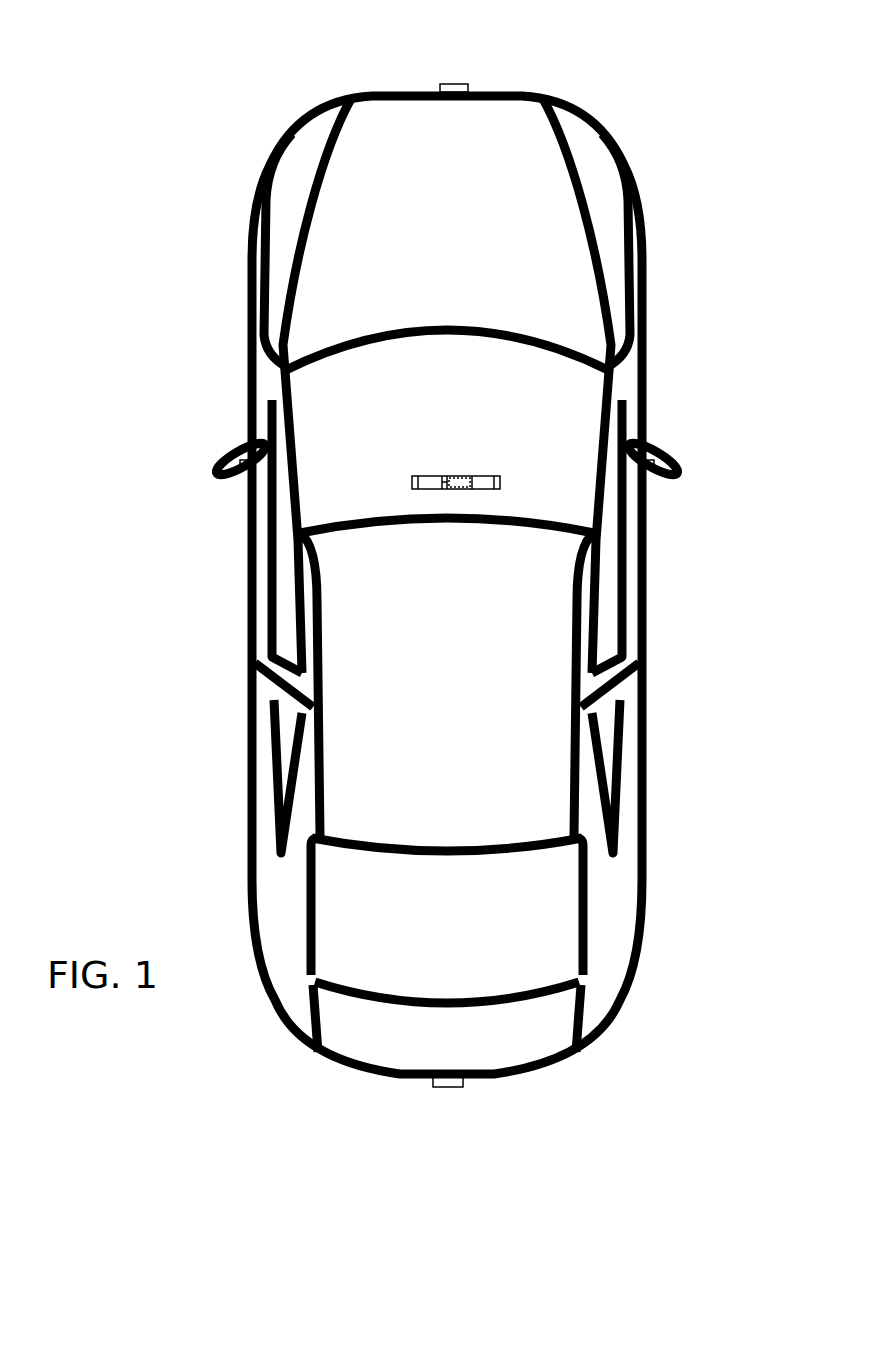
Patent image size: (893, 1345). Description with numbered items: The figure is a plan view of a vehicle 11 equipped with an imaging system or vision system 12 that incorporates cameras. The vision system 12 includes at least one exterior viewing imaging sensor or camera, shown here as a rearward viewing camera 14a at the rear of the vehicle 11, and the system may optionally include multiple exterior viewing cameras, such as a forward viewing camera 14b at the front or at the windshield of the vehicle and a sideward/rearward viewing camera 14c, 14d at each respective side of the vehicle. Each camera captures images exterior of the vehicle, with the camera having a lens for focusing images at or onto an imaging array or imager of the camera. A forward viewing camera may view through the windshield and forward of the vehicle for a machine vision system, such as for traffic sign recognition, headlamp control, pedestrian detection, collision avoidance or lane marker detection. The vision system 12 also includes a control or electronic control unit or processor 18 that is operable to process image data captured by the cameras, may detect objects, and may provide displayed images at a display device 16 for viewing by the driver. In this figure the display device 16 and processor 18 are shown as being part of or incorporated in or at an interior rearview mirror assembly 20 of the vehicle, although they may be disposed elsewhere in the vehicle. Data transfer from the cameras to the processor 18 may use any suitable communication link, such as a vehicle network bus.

The vehicle 11 is at (190, 180).
The vision system 12 is at (388, 1112).
The rearward viewing camera 14a is at (450, 1087).
The forward viewing camera 14b is at (455, 84).
The sideward/rearward viewing camera 14c is at (235, 458).
The sideward/rearward viewing camera 14d is at (660, 462).
The display device 16 is at (430, 478).
The electronic control unit (ECU) or processor 18 is at (457, 477).
The interior rearview mirror assembly 20 is at (498, 477).